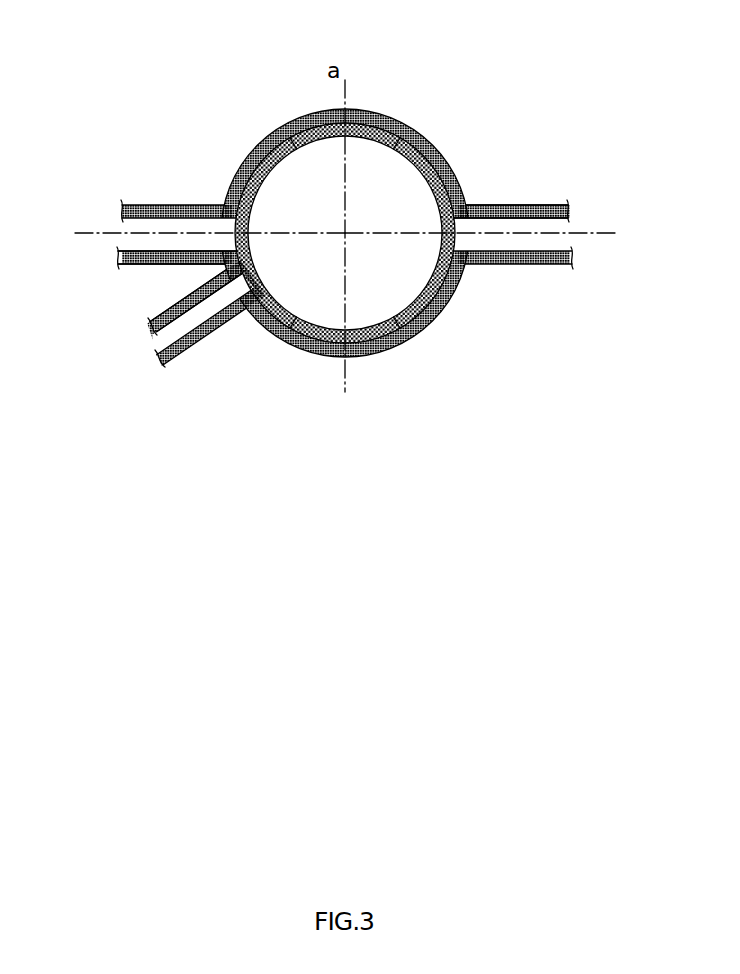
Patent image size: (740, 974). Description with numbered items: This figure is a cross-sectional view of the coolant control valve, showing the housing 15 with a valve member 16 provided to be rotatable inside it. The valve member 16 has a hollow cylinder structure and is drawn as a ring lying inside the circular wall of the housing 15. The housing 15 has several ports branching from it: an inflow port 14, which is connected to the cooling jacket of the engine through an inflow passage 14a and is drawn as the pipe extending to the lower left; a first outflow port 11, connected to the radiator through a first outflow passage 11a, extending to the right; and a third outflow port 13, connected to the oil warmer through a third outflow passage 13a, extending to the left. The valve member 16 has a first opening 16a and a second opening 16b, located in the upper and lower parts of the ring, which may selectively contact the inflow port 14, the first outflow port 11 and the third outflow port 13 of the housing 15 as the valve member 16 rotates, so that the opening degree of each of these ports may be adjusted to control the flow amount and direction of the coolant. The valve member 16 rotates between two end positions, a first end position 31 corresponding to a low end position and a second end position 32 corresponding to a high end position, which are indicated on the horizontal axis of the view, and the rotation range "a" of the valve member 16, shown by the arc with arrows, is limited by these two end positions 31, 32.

The first outflow port 11 is at (476, 228).
The first outflow passage 11a is at (556, 204).
The third outflow port 13 is at (221, 228).
The third outflow passage 13a is at (148, 265).
The inflow port 14 is at (243, 299).
The inflow passage 14a is at (166, 310).
The housing 15 is at (497, 218).
The valve member 16 is at (437, 318).
The first opening 16a is at (381, 127).
The second opening 16b is at (378, 339).
The first end position 31 is at (604, 232).
The second end position 32 is at (93, 232).